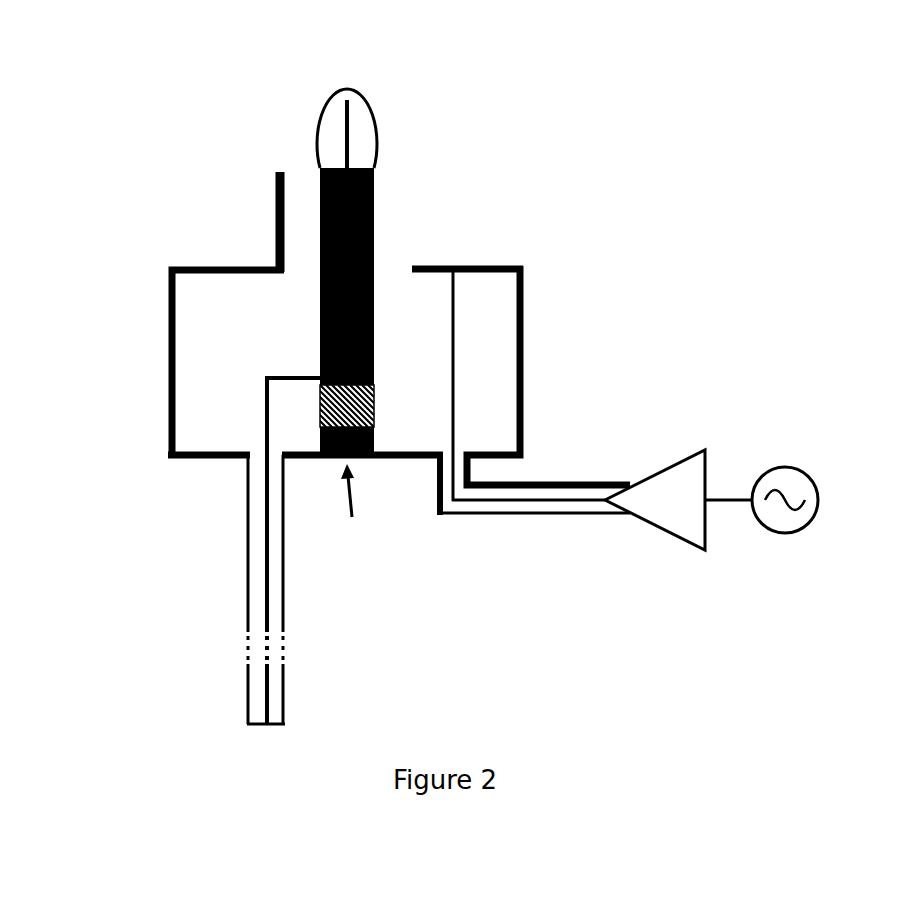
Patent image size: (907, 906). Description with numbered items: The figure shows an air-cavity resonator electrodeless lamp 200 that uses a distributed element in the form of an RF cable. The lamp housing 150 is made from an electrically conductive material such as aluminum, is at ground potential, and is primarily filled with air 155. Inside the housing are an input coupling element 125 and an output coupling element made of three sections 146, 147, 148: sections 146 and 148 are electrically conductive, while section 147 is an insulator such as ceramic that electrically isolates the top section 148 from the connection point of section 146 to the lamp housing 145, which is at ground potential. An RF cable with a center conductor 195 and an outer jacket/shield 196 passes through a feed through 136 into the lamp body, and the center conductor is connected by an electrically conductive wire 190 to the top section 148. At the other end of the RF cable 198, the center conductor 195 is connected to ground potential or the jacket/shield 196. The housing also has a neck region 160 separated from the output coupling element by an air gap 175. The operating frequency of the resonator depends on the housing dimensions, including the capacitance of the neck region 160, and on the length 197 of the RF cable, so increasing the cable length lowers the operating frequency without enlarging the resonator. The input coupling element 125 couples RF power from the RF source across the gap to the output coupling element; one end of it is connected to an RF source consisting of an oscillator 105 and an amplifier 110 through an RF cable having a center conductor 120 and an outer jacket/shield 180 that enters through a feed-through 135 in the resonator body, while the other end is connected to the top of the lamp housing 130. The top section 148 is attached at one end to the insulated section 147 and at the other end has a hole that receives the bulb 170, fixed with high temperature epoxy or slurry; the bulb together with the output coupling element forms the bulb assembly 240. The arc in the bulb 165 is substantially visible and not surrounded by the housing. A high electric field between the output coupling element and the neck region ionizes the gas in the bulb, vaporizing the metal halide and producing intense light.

The air-cavity resonator electrodeless lamp 200 is at (268, 121).
The oscillator 105 is at (802, 535).
The amplifier 110 is at (650, 525).
The center conductor 120 is at (540, 498).
The input coupling element 125 is at (455, 330).
The top of the lamp housing 130 is at (453, 268).
The feed-through 135 is at (440, 505).
The feed through 136 is at (254, 458).
The connection point to the lamp housing 145 is at (327, 460).
The output coupling element section 146 is at (376, 432).
The insulator section 147 is at (330, 412).
The top section of the output coupling element 148 is at (320, 350).
The lamp housing 150 is at (523, 295).
The air 155 is at (227, 307).
The neck region 160 is at (276, 233).
The arc in the bulb 165 is at (352, 130).
The bulb 170 is at (355, 92).
The air gap 175 is at (297, 190).
The outer jacket/shield 180 is at (510, 515).
The electrically conductive wire 190 is at (265, 392).
The center conductor 195 is at (265, 600).
The outer jacket/shield 196 is at (285, 618).
The length of the RF cable 197 is at (285, 652).
The other end of the RF cable 198 is at (255, 724).
The bulb assembly 240 is at (355, 505).